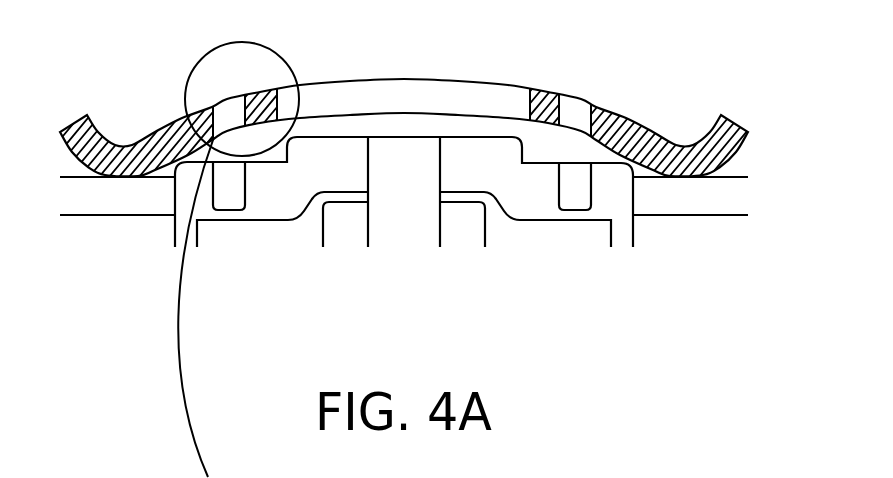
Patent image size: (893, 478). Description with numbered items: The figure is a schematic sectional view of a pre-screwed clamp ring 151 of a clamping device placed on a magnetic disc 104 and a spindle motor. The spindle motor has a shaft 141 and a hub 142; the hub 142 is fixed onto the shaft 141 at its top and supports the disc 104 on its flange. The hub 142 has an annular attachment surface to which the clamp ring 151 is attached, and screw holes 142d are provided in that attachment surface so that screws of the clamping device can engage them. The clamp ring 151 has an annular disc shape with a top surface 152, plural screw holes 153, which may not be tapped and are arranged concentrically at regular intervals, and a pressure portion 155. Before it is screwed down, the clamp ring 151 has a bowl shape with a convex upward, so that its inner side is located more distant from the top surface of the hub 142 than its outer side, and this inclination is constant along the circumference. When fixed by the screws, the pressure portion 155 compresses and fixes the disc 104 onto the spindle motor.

The magnetic disc 104 is at (725, 207).
The shaft 141 is at (402, 232).
The hub 142 is at (520, 205).
The screw hole 142d is at (573, 202).
The clamp ring 151 is at (647, 130).
The top surface 152 is at (540, 95).
The screw hole 153 is at (574, 100).
The pressure portion 155 is at (132, 145).